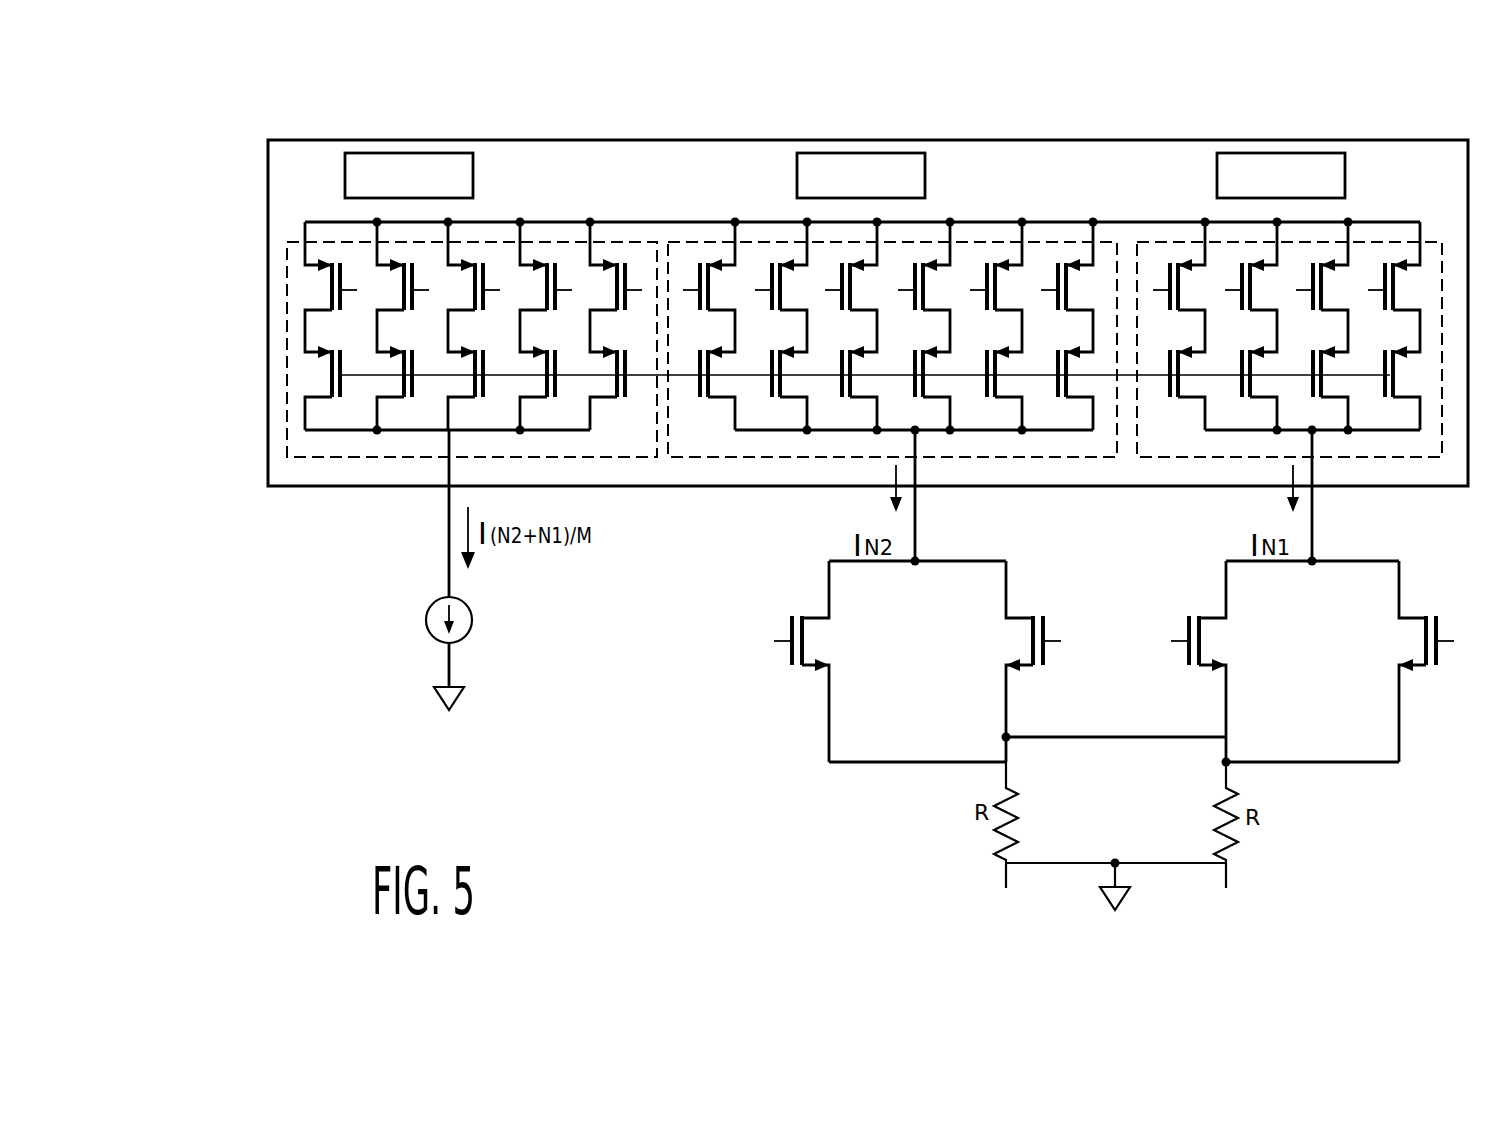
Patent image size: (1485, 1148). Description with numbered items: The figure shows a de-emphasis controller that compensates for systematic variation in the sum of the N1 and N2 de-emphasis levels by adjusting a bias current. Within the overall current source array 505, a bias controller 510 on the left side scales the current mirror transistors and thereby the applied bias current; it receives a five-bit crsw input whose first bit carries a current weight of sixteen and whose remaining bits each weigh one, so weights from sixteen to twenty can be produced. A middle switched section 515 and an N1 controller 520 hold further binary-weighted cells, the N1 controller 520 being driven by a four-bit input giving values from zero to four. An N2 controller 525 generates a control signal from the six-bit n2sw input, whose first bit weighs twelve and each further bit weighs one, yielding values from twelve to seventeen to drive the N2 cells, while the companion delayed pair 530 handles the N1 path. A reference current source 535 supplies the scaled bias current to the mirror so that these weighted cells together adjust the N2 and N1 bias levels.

The current source array 505 is at (348, 138).
The bias controller 510 is at (340, 458).
The N2 switch current source section 515 is at (713, 457).
The N1 controller 520 is at (1442, 242).
The N2 controller 525 is at (829, 738).
The delayed differential pair 530 is at (1400, 718).
The reference current source 535 is at (473, 618).